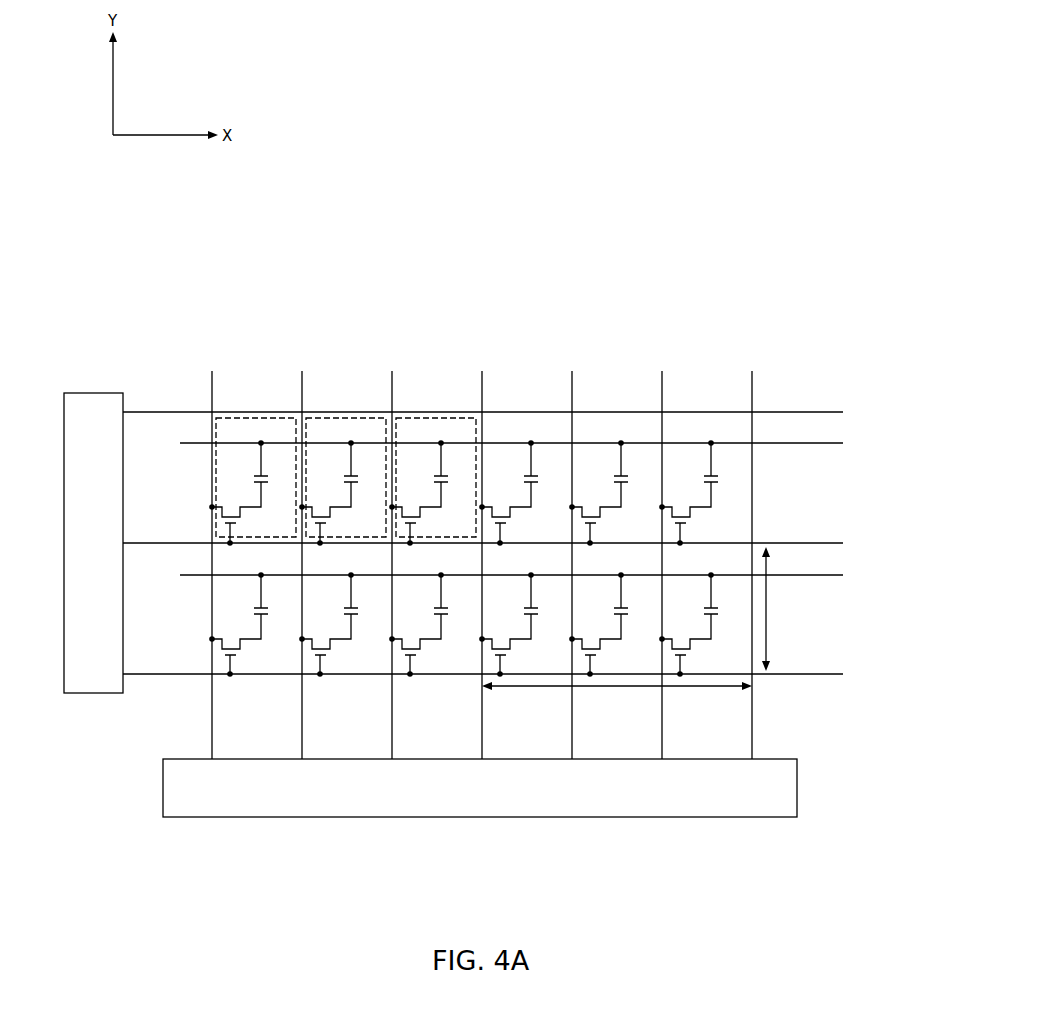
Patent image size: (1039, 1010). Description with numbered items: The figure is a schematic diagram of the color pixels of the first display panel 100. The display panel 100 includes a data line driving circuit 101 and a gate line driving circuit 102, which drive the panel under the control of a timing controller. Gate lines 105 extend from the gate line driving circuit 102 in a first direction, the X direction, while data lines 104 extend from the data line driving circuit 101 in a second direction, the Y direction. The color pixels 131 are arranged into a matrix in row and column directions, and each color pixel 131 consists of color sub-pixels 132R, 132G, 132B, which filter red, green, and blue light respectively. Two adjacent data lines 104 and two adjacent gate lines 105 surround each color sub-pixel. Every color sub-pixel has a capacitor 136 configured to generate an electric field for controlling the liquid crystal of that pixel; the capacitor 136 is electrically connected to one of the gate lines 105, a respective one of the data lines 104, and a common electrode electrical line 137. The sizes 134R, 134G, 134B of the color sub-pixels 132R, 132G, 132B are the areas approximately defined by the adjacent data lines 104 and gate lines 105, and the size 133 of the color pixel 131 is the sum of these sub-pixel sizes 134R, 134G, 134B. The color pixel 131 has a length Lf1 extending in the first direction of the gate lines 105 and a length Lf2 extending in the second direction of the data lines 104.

The display panel 100 is at (720, 193).
The data line driving circuit 101 is at (180, 785).
The gate line driving circuit 102 is at (90, 685).
The data line 104 is at (302, 720).
The gate line 105 is at (150, 543).
The color pixel 131 is at (710, 297).
The color sub-pixel 132R is at (532, 426).
The color sub-pixel 132G is at (622, 426).
The color sub-pixel 132B is at (748, 427).
The size of the color pixel 133 is at (440, 297).
The size of the color sub-pixel 134R is at (253, 418).
The size of the color sub-pixel 134G is at (343, 418).
The size of the color sub-pixel 134B is at (433, 418).
The capacitor 136 is at (722, 478).
The common electrode electrical line 137 is at (814, 444).
The length of the color pixel Lf1 is at (702, 687).
The length of the color pixel Lf2 is at (768, 610).